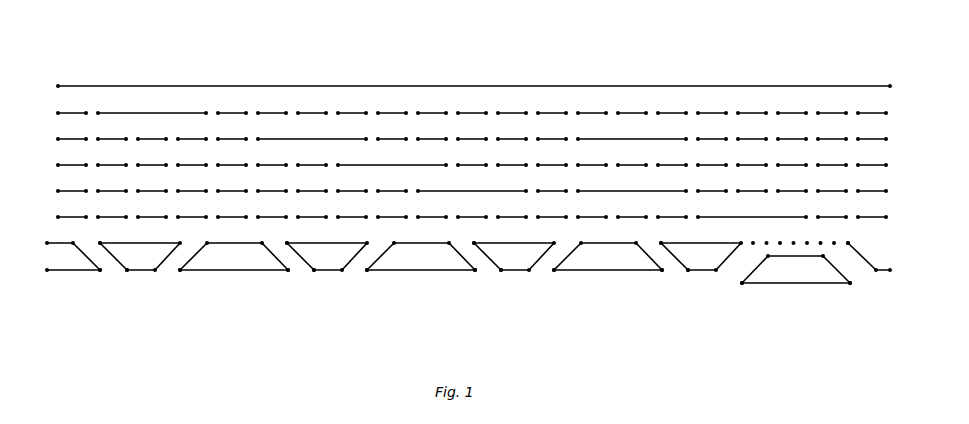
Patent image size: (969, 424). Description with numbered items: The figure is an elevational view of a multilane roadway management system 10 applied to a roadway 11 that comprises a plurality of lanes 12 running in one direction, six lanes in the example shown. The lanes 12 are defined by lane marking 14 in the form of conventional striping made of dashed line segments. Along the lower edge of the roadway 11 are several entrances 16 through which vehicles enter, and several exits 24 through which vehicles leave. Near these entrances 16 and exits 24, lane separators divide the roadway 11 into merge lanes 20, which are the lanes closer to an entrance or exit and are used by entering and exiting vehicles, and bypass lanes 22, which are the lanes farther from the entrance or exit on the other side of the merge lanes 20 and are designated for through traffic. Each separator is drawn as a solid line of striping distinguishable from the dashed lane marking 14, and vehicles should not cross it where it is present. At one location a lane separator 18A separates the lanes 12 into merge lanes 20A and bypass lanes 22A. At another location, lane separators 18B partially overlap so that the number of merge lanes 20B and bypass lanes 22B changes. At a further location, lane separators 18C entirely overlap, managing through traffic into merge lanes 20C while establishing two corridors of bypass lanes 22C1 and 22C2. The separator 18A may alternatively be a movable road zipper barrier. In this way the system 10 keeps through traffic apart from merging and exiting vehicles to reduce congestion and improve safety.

The multilane roadway management system 10 is at (797, 62).
The roadway 11 is at (635, 85).
The lanes 12 is at (880, 205).
The lane marking 14 is at (67, 184).
The entrances 16 is at (727, 270).
The lane separators 18A is at (170, 112).
The lane separators 18B is at (405, 165).
The lane separators 18C is at (603, 191).
The merge lanes 20 is at (492, 235).
The merge lanes 20A is at (468, 196).
The merge lanes 20B is at (332, 209).
The merge lanes 20C is at (659, 235).
The bypass lanes 22 is at (492, 143).
The bypass lanes 22A is at (471, 156).
The bypass lanes 22B is at (332, 117).
The bypass lanes 22C1 is at (652, 117).
The bypass lanes 22C2 is at (652, 169).
The exits 24 is at (858, 270).